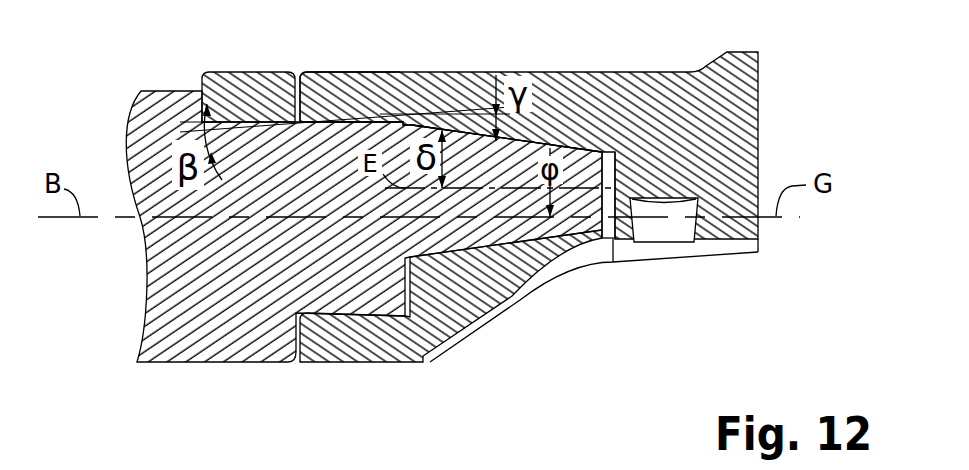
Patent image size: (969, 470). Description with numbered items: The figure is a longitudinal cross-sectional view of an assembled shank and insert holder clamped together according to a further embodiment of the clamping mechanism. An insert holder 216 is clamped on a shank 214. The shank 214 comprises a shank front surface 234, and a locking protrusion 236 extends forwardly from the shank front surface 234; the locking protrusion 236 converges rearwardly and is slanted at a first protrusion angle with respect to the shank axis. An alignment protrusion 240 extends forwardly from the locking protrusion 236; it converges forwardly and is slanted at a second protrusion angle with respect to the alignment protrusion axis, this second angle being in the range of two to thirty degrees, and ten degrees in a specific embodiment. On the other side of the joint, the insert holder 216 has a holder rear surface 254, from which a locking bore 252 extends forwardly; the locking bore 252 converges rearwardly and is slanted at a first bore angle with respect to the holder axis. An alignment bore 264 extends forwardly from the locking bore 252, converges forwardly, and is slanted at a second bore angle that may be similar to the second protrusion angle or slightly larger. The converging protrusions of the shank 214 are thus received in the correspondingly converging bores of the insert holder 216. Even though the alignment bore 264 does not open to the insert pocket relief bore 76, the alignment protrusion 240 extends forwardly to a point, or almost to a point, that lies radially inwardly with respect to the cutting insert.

The shank 214 is at (182, 325).
The insert holder 216 is at (662, 110).
The shank front surface 234 is at (299, 117).
The locking protrusion 236 is at (351, 118).
The alignment protrusion 240 is at (527, 141).
The locking bore 252 is at (407, 310).
The holder rear surface 254 is at (293, 116).
The alignment bore 264 is at (604, 222).
The insert pocket relief bore 76 is at (661, 226).